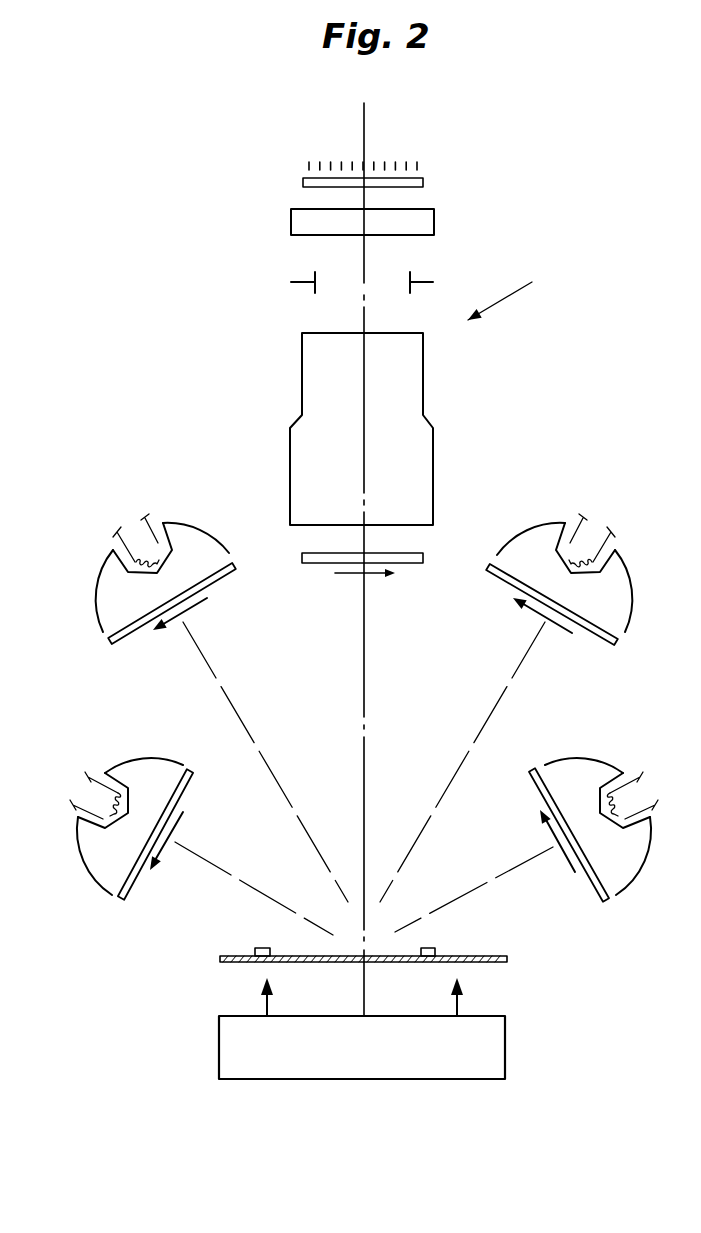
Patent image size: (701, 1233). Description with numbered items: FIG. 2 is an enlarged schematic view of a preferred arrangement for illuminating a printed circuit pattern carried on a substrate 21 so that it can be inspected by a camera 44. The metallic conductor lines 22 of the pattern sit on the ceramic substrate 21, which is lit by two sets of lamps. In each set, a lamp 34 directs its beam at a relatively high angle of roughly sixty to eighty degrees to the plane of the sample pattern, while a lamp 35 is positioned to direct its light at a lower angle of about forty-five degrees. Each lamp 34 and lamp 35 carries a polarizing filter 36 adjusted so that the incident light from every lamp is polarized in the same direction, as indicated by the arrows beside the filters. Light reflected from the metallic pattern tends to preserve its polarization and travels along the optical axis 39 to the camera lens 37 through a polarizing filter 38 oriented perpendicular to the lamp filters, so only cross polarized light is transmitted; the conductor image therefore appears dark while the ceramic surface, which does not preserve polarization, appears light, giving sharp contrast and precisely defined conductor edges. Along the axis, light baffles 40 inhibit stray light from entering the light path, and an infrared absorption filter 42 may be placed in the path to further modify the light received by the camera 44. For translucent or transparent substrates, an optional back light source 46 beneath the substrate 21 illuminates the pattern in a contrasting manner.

The substrate 21 is at (500, 952).
The line 22 is at (432, 948).
The lamp 34 is at (95, 588).
The lamp 35 is at (125, 760).
The polarizing filter 36 is at (540, 795).
The camera lens 37 is at (423, 380).
The polarizing filter 38 is at (418, 552).
The optical axis 39 is at (364, 317).
The light baffles 40 is at (413, 272).
The infrared absorption filter 42 is at (423, 209).
The camera 44 is at (522, 286).
The light source 46 is at (507, 1040).